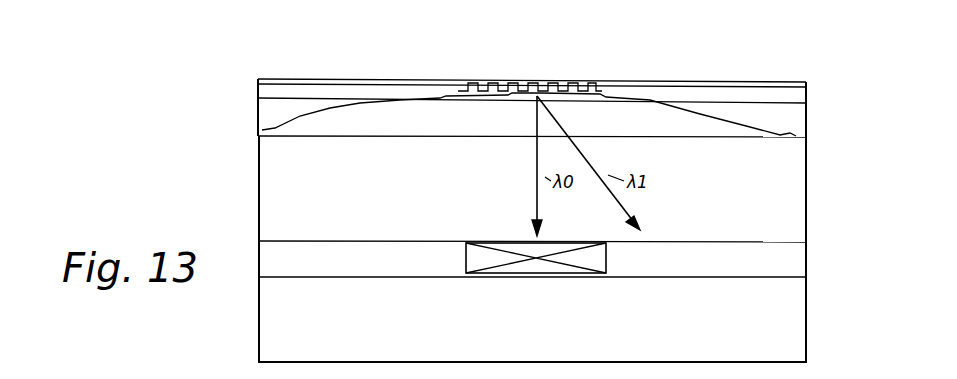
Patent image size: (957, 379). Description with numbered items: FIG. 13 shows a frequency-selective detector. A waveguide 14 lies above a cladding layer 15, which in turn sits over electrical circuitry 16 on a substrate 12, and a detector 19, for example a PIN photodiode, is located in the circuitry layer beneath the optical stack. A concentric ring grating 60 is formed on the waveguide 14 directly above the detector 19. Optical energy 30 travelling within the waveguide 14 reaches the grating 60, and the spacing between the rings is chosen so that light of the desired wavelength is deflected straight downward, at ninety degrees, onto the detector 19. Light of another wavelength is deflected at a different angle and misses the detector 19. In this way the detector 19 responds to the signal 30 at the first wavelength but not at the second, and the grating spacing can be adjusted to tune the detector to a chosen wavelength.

The substrate 12 is at (806, 323).
The waveguide 14 is at (806, 112).
The cladding layer 15 is at (806, 186).
The electrical circuitry 16 is at (806, 257).
The detector 19 is at (546, 274).
The optical energy 30 is at (348, 107).
The ring grating 60 is at (573, 82).